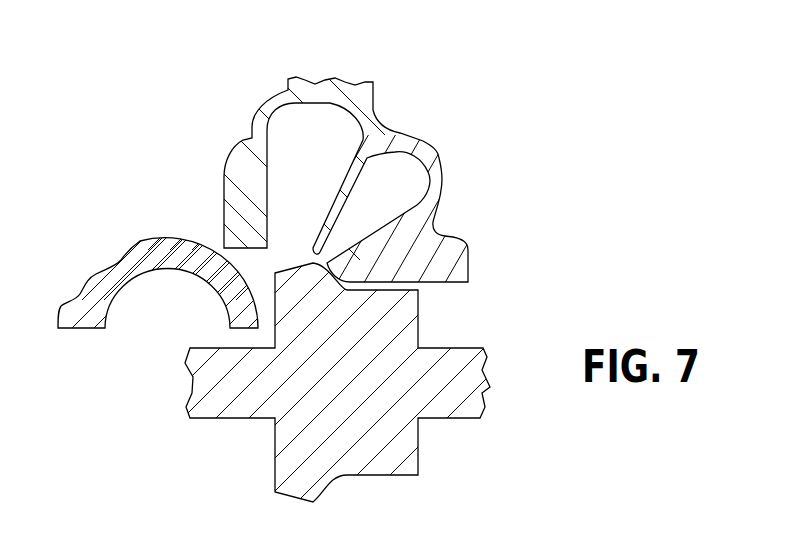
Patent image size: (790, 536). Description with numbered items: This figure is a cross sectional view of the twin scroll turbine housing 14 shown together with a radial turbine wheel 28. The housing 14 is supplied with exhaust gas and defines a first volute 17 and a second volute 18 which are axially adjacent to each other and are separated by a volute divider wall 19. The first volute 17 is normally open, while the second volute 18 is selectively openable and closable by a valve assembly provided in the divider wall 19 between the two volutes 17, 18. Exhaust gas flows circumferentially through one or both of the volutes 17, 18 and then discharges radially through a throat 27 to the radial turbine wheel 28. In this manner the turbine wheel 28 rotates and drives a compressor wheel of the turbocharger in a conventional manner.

The turbine housing 14 is at (260, 96).
The first volute 17 is at (408, 173).
The second volute 18 is at (327, 122).
The volute divider wall 19 is at (340, 195).
The throat 27 is at (283, 250).
The radial turbine wheel 28 is at (287, 467).